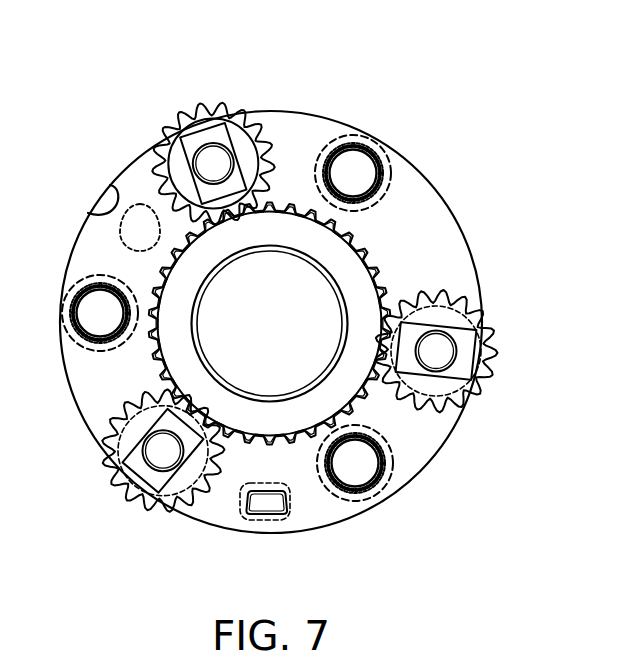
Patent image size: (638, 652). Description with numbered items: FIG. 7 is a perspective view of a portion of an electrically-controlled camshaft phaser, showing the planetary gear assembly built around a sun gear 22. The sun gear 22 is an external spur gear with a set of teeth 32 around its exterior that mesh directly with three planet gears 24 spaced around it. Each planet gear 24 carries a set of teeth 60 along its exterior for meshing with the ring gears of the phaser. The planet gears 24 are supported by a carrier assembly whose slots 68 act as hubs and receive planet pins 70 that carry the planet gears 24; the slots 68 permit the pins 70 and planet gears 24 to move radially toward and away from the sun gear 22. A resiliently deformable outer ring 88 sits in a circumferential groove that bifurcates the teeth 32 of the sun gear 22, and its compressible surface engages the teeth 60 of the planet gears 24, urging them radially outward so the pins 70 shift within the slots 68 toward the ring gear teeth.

The sun gear 22 is at (246, 257).
The planet gears 24 is at (305, 311).
The set of teeth 32 is at (340, 226).
The set of teeth 60 is at (216, 105).
The slots 68 is at (187, 193).
The planet pins 70 is at (218, 153).
The resiliently deformable outer ring 88 is at (291, 431).